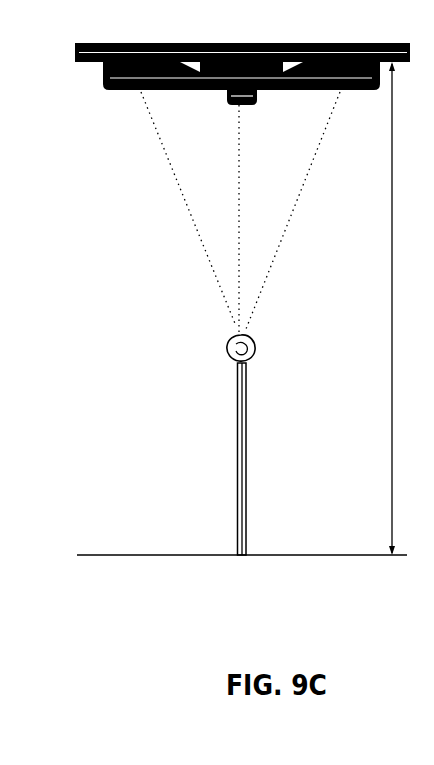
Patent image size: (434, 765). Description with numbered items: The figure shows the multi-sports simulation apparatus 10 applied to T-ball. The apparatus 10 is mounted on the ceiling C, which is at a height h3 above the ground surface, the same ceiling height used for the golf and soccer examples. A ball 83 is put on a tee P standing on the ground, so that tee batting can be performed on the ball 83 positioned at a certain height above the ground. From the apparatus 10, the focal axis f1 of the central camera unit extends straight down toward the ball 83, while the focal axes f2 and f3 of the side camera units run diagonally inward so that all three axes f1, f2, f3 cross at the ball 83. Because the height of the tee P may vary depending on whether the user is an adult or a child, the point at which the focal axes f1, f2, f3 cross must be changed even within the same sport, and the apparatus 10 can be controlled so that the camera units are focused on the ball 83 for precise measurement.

The ceiling C is at (71, 53).
The multi-sports simulation apparatus 10 is at (95, 86).
The focal axis f1 is at (220, 219).
The focal axis f2 is at (188, 209).
The focal axis f3 is at (293, 210).
The ball 83 is at (216, 348).
The tee P is at (231, 458).
The height of ceiling h3 is at (407, 308).